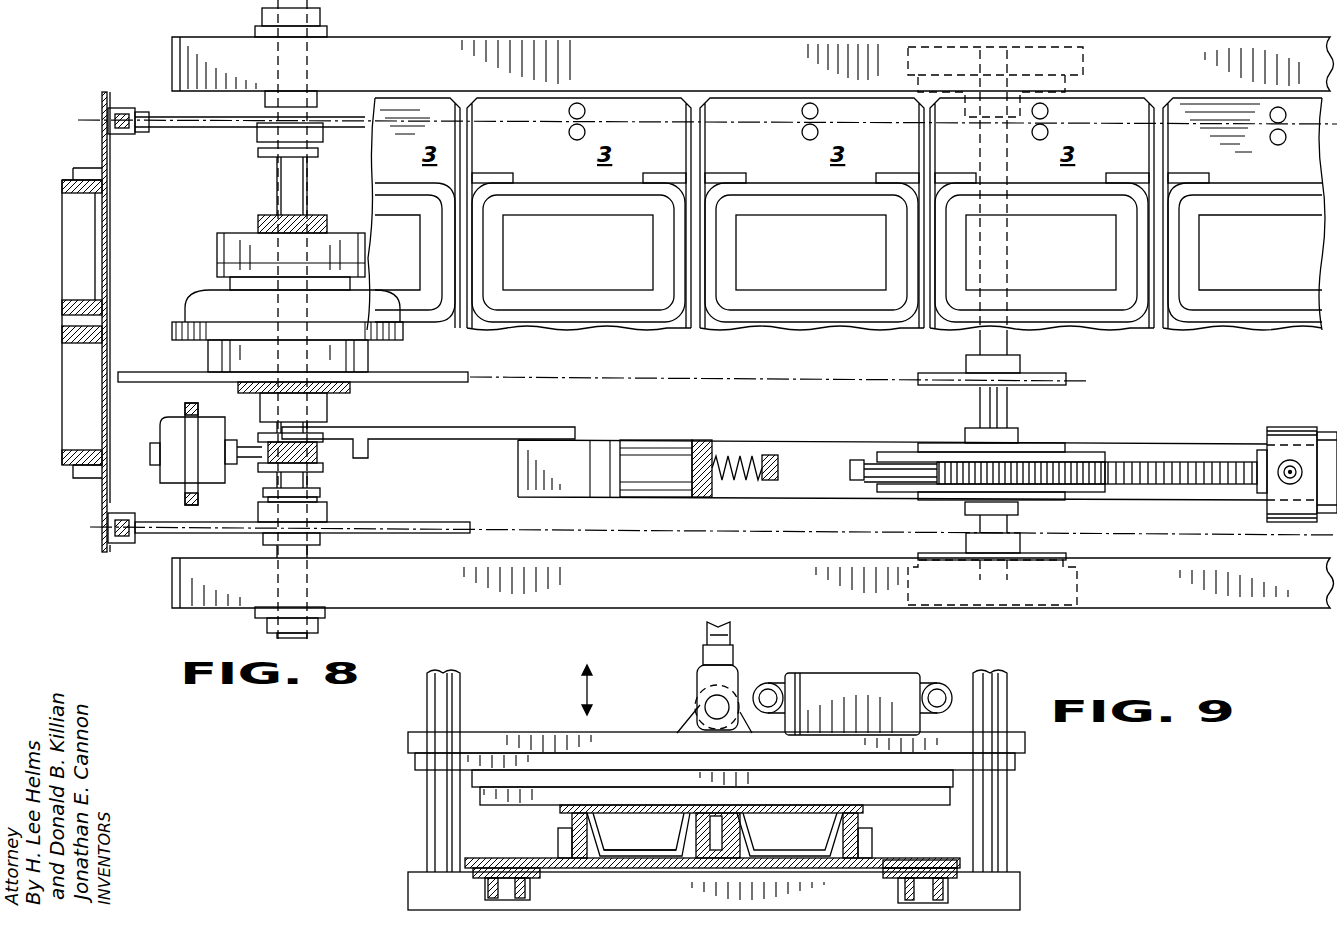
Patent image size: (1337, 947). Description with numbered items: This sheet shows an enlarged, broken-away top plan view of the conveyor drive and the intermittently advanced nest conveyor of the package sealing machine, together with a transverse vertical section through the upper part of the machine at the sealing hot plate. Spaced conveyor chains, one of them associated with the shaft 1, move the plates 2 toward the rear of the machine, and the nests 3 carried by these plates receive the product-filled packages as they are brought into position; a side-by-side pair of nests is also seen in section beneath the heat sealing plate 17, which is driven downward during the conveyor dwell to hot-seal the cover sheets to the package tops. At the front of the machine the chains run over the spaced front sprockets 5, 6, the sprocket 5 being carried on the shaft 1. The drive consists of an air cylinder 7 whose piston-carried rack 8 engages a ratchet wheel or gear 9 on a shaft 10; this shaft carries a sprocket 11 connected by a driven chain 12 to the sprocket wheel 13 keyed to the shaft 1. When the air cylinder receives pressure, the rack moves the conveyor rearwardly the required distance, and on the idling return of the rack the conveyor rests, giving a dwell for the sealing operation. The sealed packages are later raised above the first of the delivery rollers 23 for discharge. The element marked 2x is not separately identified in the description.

In FIG. 8, the shaft 1 is at (306, 54).
In FIG. 8, the plates 2 is at (120, 134).
In FIG. 9, the plates 2 is at (512, 870).
In FIG. 8, the pallet carrier plate / tray 2x is at (108, 268).
In FIG. 9, the pallet carrier plate / tray 2x is at (657, 858).
In FIG. 8, the nests 3 is at (105, 206).
In FIG. 9, the nests 3 is at (910, 870).
In FIG. 8, the front sprocket 5 is at (204, 126).
In FIG. 8, the front sprocket 6 is at (152, 113).
In FIG. 8, the air cylinder 7 is at (1320, 428).
In FIG. 8, the piston-carried rack 8 is at (1131, 462).
In FIG. 8, the ratchet wheel or gear 9 is at (951, 461).
In FIG. 8, the shaft 10 is at (1008, 406).
In FIG. 8, the sprocket 11 is at (942, 374).
In FIG. 8, the driven chain 12 is at (738, 370).
In FIG. 8, the sprocket wheel 13 is at (288, 176).
In FIG. 9, the heat sealing plate 17 is at (953, 800).
In FIG. 9, the delivery rollers 23 is at (587, 842).